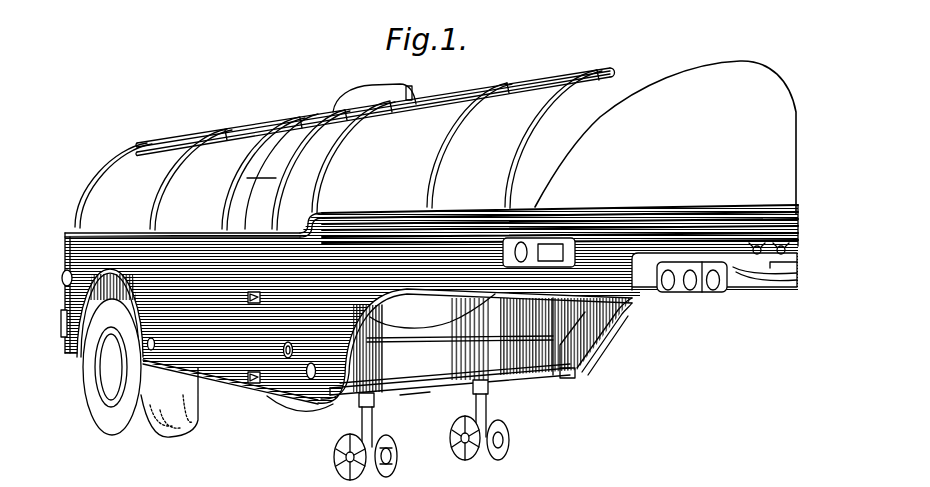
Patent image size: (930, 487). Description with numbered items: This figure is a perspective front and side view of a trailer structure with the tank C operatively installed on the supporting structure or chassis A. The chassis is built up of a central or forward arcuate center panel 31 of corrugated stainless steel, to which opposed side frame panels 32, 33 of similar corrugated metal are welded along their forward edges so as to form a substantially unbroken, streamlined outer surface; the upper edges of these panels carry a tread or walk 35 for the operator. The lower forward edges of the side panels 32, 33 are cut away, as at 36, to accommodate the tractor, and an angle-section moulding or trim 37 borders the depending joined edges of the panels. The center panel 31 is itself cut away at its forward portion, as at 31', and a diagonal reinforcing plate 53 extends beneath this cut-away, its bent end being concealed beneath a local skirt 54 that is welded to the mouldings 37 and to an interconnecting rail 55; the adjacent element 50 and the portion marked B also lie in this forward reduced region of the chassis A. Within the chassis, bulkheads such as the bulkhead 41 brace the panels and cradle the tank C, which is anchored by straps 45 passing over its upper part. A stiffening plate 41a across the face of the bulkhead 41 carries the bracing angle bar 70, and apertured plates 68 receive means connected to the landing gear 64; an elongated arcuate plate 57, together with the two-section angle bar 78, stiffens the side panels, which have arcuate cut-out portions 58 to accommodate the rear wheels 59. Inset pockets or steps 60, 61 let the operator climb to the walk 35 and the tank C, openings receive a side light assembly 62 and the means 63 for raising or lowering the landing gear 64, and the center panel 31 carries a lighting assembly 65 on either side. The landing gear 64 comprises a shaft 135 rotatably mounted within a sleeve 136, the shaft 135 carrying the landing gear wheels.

The center panel 31 is at (560, 153).
The cut-away portion 31' is at (765, 284).
The side frame panel 32 is at (586, 312).
The side frame panel 33 is at (325, 245).
The tread or walk 35 is at (185, 233).
The cut-away portion 36 is at (380, 318).
The moulding or trim 37 is at (495, 290).
The bulkhead 41 is at (530, 371).
The stiffening plate 41a is at (450, 373).
The straps 45 is at (97, 182).
The tail lamp 50 is at (680, 292).
The reinforcing plate 53 is at (773, 282).
The skirt or moulding 54 is at (643, 288).
The interconnecting rail 55 is at (702, 293).
The plate 57 is at (586, 334).
The arcuate cut-out portion 58 is at (137, 332).
The rear wheels 59 is at (137, 427).
The inset pocket or step 60 is at (250, 303).
The inset pocket or step 61 is at (257, 384).
The side light assembly 62 is at (312, 378).
The landing gear operating means 63 is at (287, 359).
The landing gear 64 is at (395, 457).
The lighting assembly 65 is at (548, 247).
The plates 68 is at (427, 386).
The bracing angle bar 70 is at (448, 341).
The angle bar 78 is at (567, 378).
The shaft 135 is at (393, 433).
The sleeve 136 is at (360, 410).
The supporting structure or chassis A is at (246, 398).
The bumper portion B is at (724, 306).
The tank C is at (716, 78).